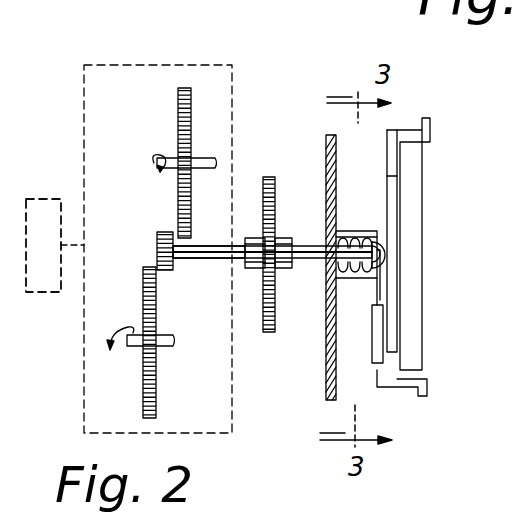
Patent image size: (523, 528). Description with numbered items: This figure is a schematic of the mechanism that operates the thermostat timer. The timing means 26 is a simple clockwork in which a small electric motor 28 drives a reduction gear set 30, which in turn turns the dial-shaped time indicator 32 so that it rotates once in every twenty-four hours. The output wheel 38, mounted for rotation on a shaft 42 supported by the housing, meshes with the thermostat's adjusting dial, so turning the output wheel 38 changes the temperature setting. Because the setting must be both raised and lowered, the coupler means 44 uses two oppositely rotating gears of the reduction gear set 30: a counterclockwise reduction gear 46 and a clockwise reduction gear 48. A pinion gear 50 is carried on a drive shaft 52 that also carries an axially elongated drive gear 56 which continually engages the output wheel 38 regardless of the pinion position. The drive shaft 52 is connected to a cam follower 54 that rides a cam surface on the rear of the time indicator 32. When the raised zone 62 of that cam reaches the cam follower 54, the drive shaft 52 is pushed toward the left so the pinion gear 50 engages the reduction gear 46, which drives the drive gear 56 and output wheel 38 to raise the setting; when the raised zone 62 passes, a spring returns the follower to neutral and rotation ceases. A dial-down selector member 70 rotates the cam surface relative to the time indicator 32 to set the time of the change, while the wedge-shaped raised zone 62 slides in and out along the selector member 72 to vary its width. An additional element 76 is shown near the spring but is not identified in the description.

The timing means 26 is at (72, 186).
The motor 28 is at (33, 292).
The reduction gear set 30 is at (131, 64).
The time indicator dial 32 is at (413, 168).
The output wheel 38 is at (275, 178).
The shaft 42 is at (283, 270).
The coupler means 44 is at (218, 264).
The reduction gear 46 is at (150, 393).
The reduction gear 48 is at (192, 100).
The pinion gear 50 is at (172, 271).
The drive shaft 52 is at (204, 243).
The cam follower 54 is at (386, 255).
The drive gear 56 is at (290, 240).
The raised zone 62 is at (368, 333).
The dial-down selector member 70 is at (372, 273).
The selector member 72 is at (337, 178).
The bracket 76 is at (372, 236).